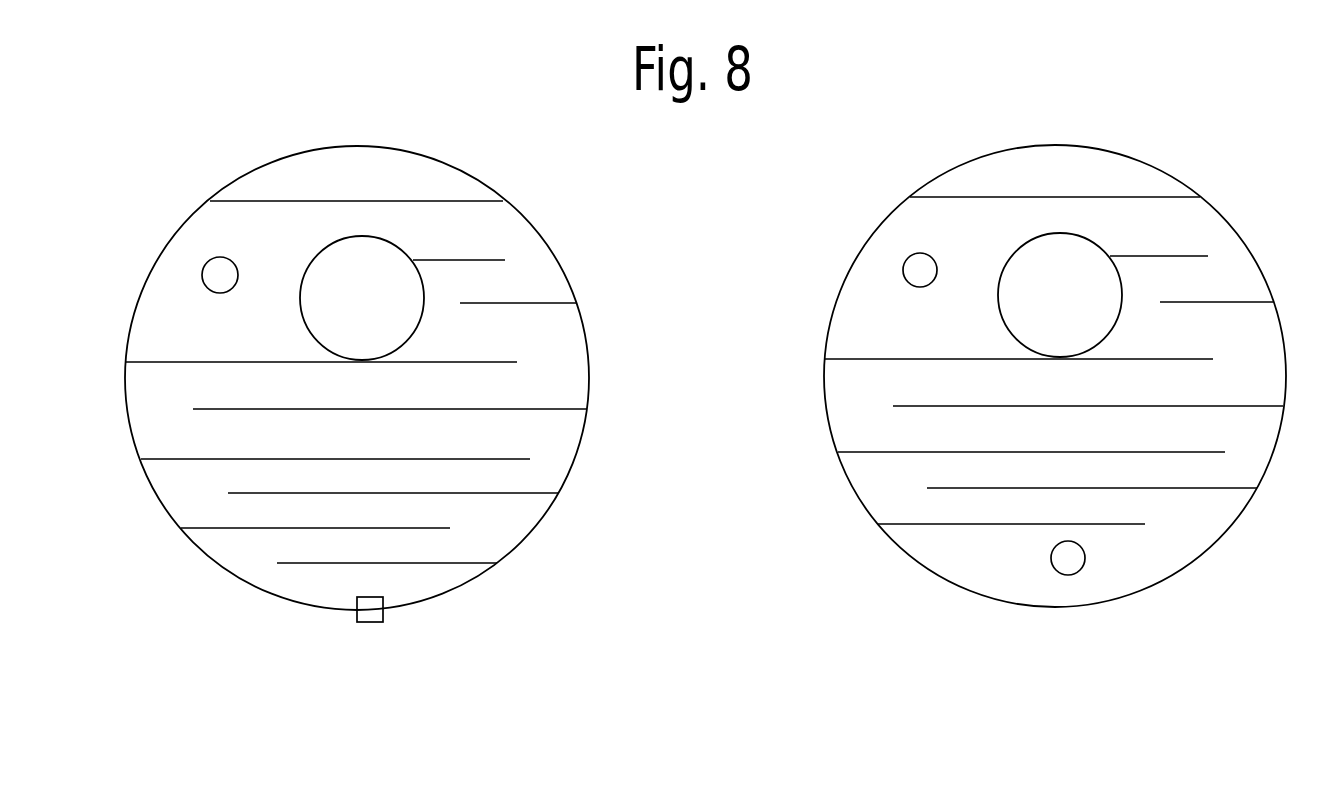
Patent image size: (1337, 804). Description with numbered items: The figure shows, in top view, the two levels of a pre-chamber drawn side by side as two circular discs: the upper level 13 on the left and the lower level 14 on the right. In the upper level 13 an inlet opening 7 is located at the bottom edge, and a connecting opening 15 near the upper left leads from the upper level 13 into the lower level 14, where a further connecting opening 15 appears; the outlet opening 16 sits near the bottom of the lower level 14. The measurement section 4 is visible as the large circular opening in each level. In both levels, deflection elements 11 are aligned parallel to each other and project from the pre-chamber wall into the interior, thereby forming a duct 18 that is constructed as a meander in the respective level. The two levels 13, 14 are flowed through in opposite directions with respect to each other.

The measurement section 4 is at (343, 318).
The inlet opening 7 is at (371, 606).
The deflection elements 11 is at (245, 409).
The upper level 13 is at (476, 590).
The lower level 14 is at (916, 572).
The connecting opening 15 is at (216, 276).
The outlet opening 16 is at (1066, 552).
The duct 18 is at (470, 230).